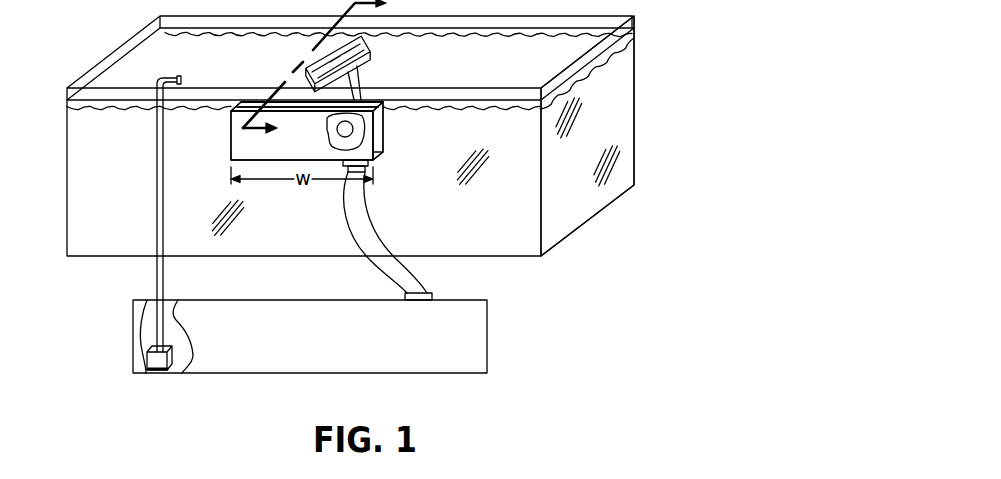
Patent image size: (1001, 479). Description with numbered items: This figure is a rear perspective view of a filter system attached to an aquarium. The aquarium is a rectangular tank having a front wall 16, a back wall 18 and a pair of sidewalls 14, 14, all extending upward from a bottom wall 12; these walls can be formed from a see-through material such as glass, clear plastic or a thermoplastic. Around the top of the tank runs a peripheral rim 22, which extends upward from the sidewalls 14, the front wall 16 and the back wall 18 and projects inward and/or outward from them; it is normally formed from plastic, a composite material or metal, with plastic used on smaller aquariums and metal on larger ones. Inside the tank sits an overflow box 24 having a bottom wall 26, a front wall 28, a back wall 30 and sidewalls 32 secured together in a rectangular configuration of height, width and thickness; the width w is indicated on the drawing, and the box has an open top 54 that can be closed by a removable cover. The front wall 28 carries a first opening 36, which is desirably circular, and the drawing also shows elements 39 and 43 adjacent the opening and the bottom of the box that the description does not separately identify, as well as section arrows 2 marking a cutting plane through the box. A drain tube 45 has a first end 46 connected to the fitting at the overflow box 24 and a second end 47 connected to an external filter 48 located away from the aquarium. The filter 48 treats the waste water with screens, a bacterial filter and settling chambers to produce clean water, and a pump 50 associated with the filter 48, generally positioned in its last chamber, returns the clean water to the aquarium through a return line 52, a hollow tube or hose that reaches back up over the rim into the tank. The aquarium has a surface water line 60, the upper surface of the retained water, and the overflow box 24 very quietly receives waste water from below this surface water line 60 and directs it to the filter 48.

The section line 2- 2 is at (320, 69).
The bottom wall 12 is at (523, 257).
The sidewalls 14 is at (622, 103).
The front wall 16 is at (485, 71).
The back wall 18 is at (433, 224).
The peripheral rim 22 is at (630, 25).
The overflow box 24 is at (220, 156).
The bottom wall 26 is at (378, 157).
The front wall 28 is at (386, 144).
The back wall 30 is at (245, 157).
The sidewall 32 is at (231, 115).
The first opening 36 is at (352, 130).
The inlet plate 39 is at (378, 120).
The outlet fitting 43 is at (343, 166).
The drain tube 45 is at (363, 232).
The first end 46 is at (344, 172).
The second end 47 is at (433, 291).
The filter 48 is at (477, 343).
The pump 50 is at (152, 360).
The return line 52 is at (157, 182).
The open top 54 is at (258, 108).
The surface water line 60 is at (458, 34).